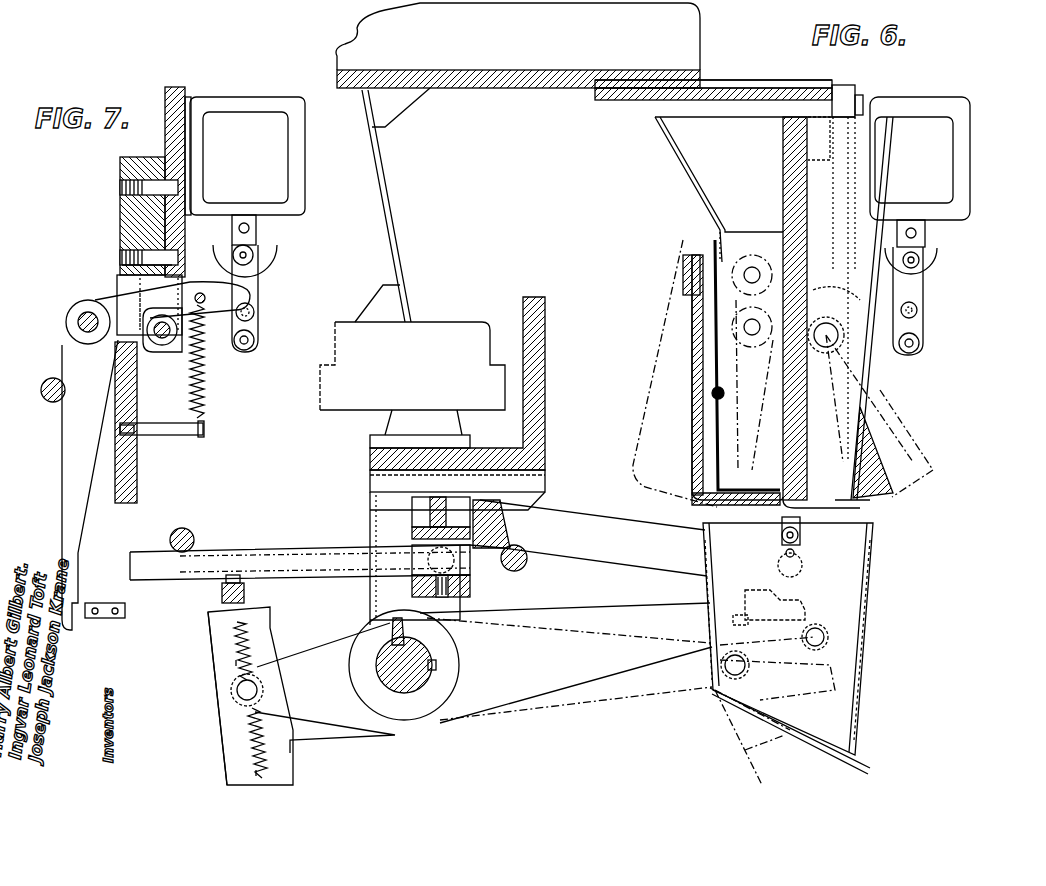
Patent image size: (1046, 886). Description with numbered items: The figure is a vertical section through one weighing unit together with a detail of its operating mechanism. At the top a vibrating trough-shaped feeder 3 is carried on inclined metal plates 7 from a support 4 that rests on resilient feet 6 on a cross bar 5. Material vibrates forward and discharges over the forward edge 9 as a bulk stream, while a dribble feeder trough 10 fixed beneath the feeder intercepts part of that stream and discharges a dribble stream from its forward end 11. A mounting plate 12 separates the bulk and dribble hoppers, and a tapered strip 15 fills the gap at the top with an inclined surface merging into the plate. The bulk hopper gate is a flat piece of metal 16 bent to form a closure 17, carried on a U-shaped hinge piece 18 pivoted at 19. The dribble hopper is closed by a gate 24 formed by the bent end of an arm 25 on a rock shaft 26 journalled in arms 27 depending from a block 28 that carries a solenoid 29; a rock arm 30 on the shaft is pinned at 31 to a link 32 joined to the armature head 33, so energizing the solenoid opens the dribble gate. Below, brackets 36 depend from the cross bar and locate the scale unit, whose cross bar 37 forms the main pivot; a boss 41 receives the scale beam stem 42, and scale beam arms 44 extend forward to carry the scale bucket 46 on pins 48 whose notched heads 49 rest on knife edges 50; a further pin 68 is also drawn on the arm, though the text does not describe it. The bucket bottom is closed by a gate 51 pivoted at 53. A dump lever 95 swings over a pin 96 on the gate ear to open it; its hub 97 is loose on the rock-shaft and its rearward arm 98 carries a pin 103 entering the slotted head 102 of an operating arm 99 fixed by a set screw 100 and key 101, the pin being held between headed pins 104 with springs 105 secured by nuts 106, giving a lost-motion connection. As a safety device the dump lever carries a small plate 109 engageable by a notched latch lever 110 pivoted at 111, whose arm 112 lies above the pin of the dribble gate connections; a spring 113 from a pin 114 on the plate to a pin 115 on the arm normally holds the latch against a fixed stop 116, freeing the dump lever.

In FIG. 6, the vibrating trough-shaped feeder 3 is at (505, 58).
In FIG. 6, the support 4 is at (438, 330).
In FIG. 6, the cross bar 5 is at (545, 418).
In FIG. 6, the resilient foot 6 is at (395, 430).
In FIG. 6, the inclined metal plate 7 is at (400, 203).
In FIG. 6, the forward edge 9 is at (710, 80).
In FIG. 6, the dribble feeder trough 10 is at (740, 88).
In FIG. 6, the forward end 11 is at (845, 100).
In FIG. 7, the mounting plate 12 is at (130, 233).
In FIG. 6, the mounting plate 12 is at (790, 193).
In FIG. 6, the tapered strip 15 is at (808, 135).
In FIG. 6, the flat piece of metal 16 is at (692, 377).
In FIG. 6, the closure 17 is at (750, 530).
In FIG. 6, the U-shaped hinge piece 18 is at (683, 275).
In FIG. 6, the pivot 19 is at (745, 280).
In FIG. 6, the dribble gate 24 is at (860, 505).
In FIG. 6, the arm 25 is at (872, 470).
In FIG. 7, the rock shaft 26 is at (162, 345).
In FIG. 6, the rock shaft 26 is at (875, 380).
In FIG. 7, the arm 27 is at (120, 268).
In FIG. 7, the block 28 is at (150, 215).
In FIG. 6, the block 28 is at (860, 105).
In FIG. 7, the solenoid 29 is at (215, 128).
In FIG. 6, the solenoid 29 is at (942, 182).
In FIG. 6, the rock arm 30 is at (840, 345).
In FIG. 7, the pin 31 is at (254, 340).
In FIG. 6, the pin 31 is at (920, 348).
In FIG. 7, the link 32 is at (258, 300).
In FIG. 6, the link 32 is at (920, 290).
In FIG. 7, the head 33 is at (256, 255).
In FIG. 6, the head 33 is at (928, 258).
In FIG. 6, the bracket 36 is at (370, 508).
In FIG. 6, the cross bar 37 is at (412, 532).
In FIG. 6, the boss 41 is at (412, 583).
In FIG. 6, the scale beam stem 42 is at (148, 578).
In FIG. 6, the scale beam arm 44 is at (610, 550).
In FIG. 6, the scale bucket 46 is at (858, 610).
In FIG. 6, the pin 48 is at (800, 538).
In FIG. 6, the notched head 49 is at (796, 553).
In FIG. 6, the knife edge 50 is at (802, 567).
In FIG. 6, the gate 51 is at (858, 752).
In FIG. 6, the pivot 53 is at (722, 663).
In FIG. 6, the pin 68 is at (524, 565).
In FIG. 6, the dump lever 95 is at (628, 690).
In FIG. 6, the pin 96 is at (830, 637).
In FIG. 6, the hub 97 is at (445, 715).
In FIG. 6, the arm 98 is at (340, 725).
In FIG. 6, the operating arm 99 is at (292, 638).
In FIG. 6, the set screw 100 is at (396, 618).
In FIG. 6, the key 101 is at (438, 658).
In FIG. 6, the slotted head 102 is at (222, 655).
In FIG. 6, the pin 103 is at (238, 697).
In FIG. 6, the headed pin 104 is at (230, 680).
In FIG. 6, the spring 105 is at (234, 632).
In FIG. 6, the nut 106 is at (222, 592).
In FIG. 7, the small plate 109 is at (105, 603).
In FIG. 7, the notched latch lever 110 is at (78, 545).
In FIG. 7, the pivot 111 is at (88, 317).
In FIG. 7, the arm 112 is at (118, 286).
In FIG. 6, the arm 112 is at (918, 308).
In FIG. 7, the spring 113 is at (205, 392).
In FIG. 7, the pin 114 is at (172, 437).
In FIG. 7, the pin 115 is at (202, 295).
In FIG. 7, the fixed stop 116 is at (44, 388).